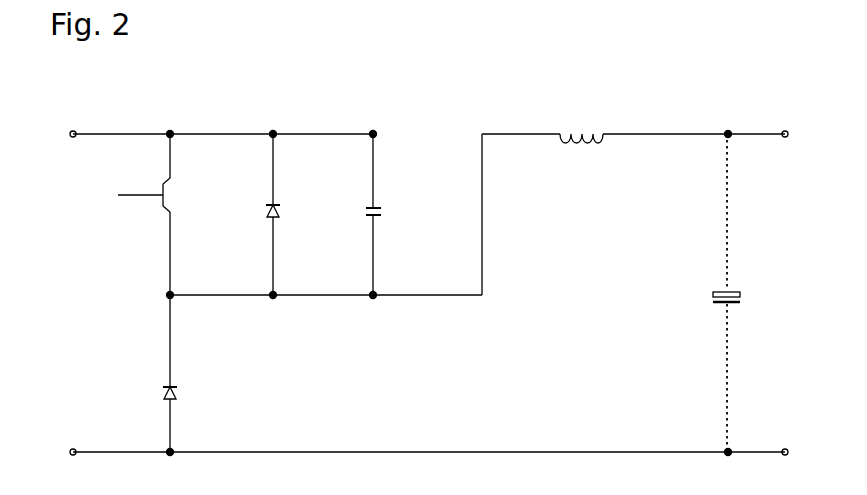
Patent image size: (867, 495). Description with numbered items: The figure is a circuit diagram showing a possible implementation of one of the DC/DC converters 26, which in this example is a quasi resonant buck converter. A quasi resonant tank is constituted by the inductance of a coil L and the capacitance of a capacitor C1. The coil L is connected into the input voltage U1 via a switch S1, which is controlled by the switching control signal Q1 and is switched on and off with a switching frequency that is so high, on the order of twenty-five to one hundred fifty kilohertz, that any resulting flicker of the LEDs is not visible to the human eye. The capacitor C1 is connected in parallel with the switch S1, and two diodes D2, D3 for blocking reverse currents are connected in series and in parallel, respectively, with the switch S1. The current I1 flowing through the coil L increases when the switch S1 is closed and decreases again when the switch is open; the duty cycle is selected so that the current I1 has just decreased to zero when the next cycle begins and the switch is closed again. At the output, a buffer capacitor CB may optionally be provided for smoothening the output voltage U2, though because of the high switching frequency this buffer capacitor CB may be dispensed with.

The voltage U1 is at (100, 110).
The switching control signal Q1 is at (122, 214).
The switch S1 is at (200, 197).
The diode D3 is at (294, 214).
The capacitor C1 is at (395, 214).
The DC/DC converter 26 is at (422, 103).
The current I1 is at (512, 115).
The coil L is at (581, 116).
The output voltage U2 is at (756, 112).
The buffer capacitor CB is at (751, 293).
The diode D2 is at (195, 373).